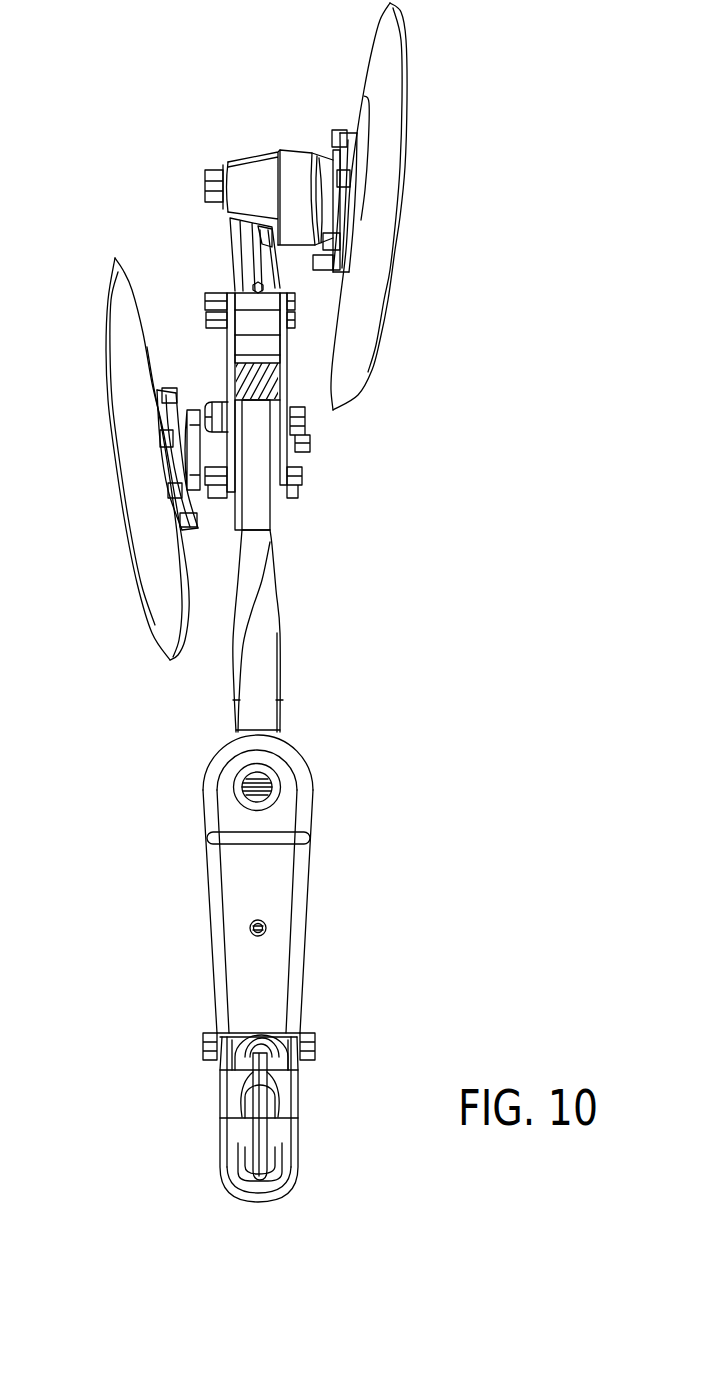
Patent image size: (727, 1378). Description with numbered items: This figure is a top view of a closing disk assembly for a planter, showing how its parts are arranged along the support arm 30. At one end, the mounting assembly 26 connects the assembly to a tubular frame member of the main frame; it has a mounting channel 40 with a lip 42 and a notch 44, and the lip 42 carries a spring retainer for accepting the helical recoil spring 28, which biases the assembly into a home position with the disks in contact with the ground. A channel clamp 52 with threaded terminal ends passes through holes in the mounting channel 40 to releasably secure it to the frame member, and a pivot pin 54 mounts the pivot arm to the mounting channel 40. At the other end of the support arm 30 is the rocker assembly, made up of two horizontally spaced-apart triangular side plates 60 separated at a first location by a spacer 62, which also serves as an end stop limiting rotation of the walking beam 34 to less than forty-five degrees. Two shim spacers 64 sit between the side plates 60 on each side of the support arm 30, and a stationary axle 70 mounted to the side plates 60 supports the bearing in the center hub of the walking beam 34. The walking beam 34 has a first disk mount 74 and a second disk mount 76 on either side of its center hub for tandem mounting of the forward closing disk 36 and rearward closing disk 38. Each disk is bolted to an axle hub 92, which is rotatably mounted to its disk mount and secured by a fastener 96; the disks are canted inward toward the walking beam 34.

The mounting assembly 26 is at (352, 921).
The helical recoil spring 28 is at (255, 795).
The support arm 30 is at (272, 635).
The walking beam 34 is at (253, 253).
The forward closing disk 36 is at (127, 357).
The rearward closing disk 38 is at (382, 90).
The mounting channel 40 is at (272, 888).
The lip 42 is at (284, 773).
The notch 44 is at (273, 1077).
The channel clamp 52 is at (258, 1127).
The pivot pin 54 is at (205, 1045).
The triangular side plates 60 is at (283, 367).
The spacer 62 is at (253, 300).
The shim spacers 64 is at (275, 485).
The stationary axle 70 is at (296, 323).
The first disk mount 74 is at (217, 443).
The second disk mount 76 is at (250, 177).
The axle hub 92 is at (324, 170).
The fastener 96 is at (215, 185).